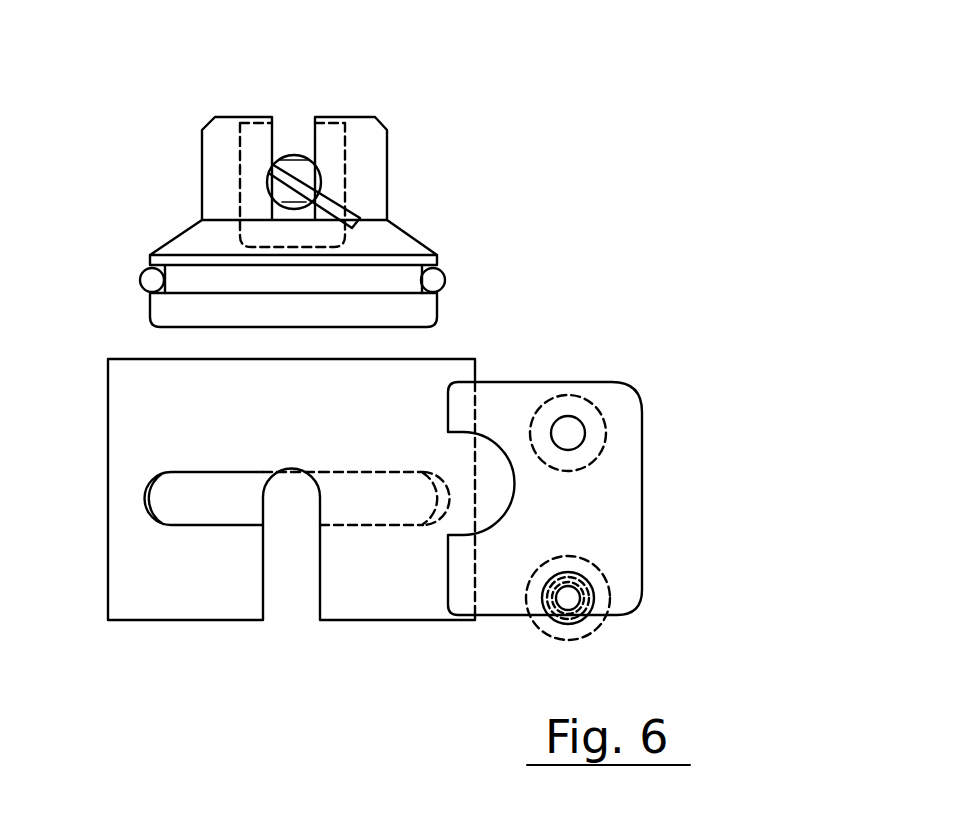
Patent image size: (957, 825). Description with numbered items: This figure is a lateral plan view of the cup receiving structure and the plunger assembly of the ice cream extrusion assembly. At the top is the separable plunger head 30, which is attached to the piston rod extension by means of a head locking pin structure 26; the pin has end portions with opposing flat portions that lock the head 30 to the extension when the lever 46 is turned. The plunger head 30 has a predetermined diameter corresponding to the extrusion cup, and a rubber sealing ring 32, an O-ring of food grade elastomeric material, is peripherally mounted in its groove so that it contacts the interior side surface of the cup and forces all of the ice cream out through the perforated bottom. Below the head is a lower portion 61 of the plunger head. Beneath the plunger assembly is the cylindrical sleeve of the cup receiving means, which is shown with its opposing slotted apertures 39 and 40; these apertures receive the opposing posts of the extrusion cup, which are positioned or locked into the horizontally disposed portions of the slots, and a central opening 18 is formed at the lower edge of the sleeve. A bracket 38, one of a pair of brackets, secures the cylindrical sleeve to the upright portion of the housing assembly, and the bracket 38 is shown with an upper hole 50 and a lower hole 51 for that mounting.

The head locking pin structure 26 is at (292, 140).
The lever 46 is at (330, 203).
The plunger head 30 is at (387, 248).
The sealing ring 32 is at (433, 280).
The base flange 61 is at (437, 322).
The bracket 38 is at (505, 395).
The mounting hole 50 is at (566, 431).
The mounting hole 51 is at (588, 570).
The slotted aperture 39 is at (198, 503).
The slotted aperture 40 is at (382, 503).
The central slot 18 is at (292, 594).